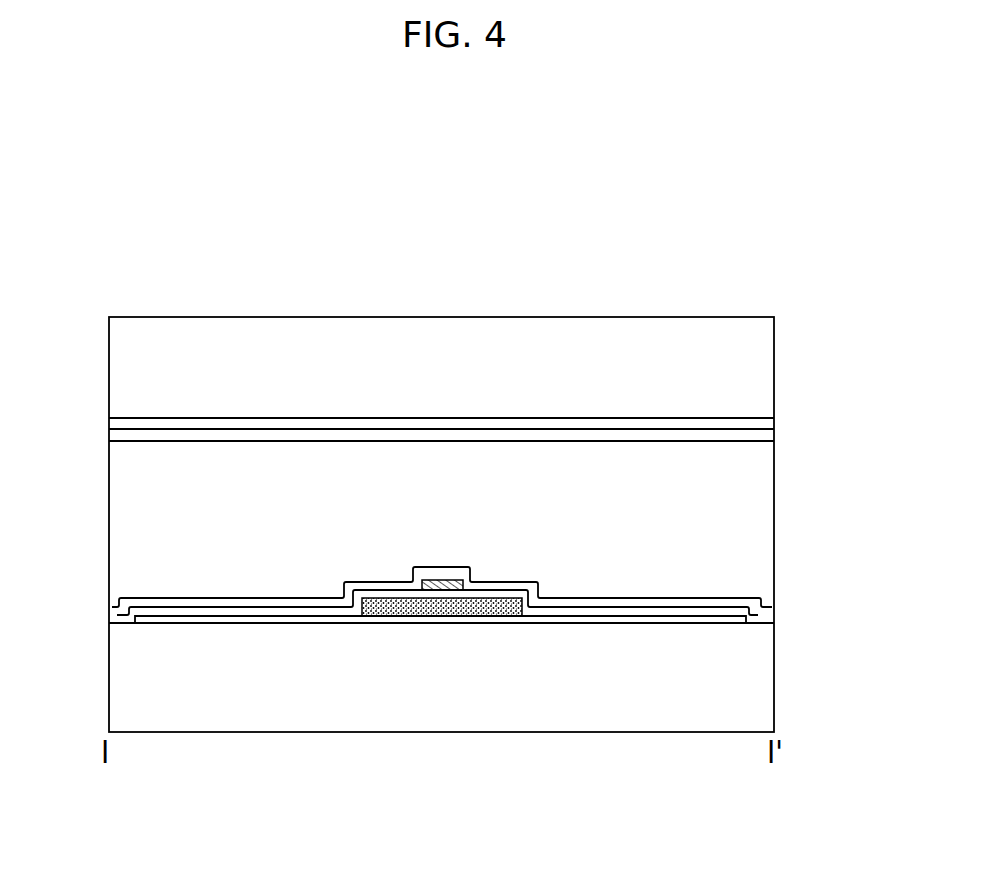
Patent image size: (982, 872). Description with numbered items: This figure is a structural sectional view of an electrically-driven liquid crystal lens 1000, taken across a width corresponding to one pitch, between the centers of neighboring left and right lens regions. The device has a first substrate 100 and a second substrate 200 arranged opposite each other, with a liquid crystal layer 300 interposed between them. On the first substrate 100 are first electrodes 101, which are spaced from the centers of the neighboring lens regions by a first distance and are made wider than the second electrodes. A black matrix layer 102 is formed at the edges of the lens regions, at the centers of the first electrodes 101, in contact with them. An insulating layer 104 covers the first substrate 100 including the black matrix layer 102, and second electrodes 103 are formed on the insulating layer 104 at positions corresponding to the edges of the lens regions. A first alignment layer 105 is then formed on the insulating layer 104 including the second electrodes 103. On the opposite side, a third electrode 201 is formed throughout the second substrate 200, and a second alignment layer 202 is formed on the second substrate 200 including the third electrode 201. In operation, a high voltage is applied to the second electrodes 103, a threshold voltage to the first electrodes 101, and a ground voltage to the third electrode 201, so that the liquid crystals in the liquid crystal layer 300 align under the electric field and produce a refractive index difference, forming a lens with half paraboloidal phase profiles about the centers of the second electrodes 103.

The electrically-driven liquid crystal lens 1000 is at (610, 274).
The first substrate 100 is at (752, 680).
The first electrodes 101 is at (648, 622).
The black matrix layer 102 is at (512, 600).
The second electrodes 103 is at (444, 586).
The insulating layer 104 is at (772, 613).
The first alignment layer 105 is at (113, 606).
The second substrate 200 is at (748, 362).
The third electrode 201 is at (760, 424).
The second alignment layer 202 is at (760, 436).
The liquid crystal layer 300 is at (750, 530).